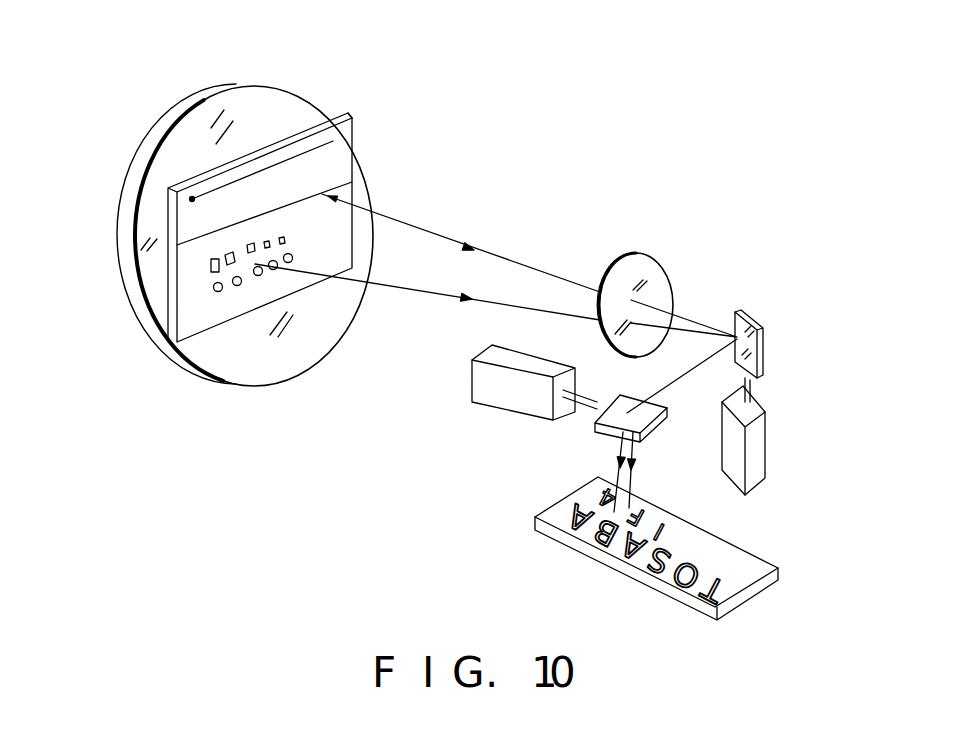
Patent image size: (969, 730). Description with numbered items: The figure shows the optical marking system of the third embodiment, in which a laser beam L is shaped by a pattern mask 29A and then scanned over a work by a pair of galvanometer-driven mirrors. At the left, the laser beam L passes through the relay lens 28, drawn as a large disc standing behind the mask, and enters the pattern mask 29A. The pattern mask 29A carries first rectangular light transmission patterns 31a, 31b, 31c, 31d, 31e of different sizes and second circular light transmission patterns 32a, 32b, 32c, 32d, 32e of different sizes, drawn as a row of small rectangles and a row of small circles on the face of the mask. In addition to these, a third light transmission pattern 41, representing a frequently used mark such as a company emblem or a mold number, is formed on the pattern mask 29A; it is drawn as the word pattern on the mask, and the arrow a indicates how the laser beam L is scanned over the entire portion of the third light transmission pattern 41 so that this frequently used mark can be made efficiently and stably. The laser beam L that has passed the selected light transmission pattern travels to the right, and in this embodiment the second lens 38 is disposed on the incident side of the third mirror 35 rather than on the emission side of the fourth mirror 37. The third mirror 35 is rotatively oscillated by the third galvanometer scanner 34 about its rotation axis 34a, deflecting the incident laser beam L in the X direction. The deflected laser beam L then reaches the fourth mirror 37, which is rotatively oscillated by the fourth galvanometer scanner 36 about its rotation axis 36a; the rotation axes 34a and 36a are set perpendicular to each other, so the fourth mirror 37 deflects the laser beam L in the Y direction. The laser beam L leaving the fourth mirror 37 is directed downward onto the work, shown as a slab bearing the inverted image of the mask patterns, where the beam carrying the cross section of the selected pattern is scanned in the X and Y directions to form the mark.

The relay lens 28 is at (248, 88).
The pattern mask 29A is at (350, 190).
The third light transmission pattern 41 is at (311, 152).
The arrow a is at (350, 110).
The first rectangular light transmission pattern 31a is at (211, 272).
The first rectangular light transmission pattern 31b is at (225, 261).
The first rectangular light transmission pattern 31c is at (247, 249).
The first rectangular light transmission pattern 31d is at (269, 243).
The first rectangular light transmission pattern 31e is at (285, 240).
The second circular light transmission pattern 32a is at (214, 290).
The second circular light transmission pattern 32b is at (237, 286).
The second circular light transmission pattern 32c is at (258, 276).
The second circular light transmission pattern 32d is at (291, 262).
The second circular light transmission pattern 32e is at (278, 267).
The laser beam L is at (454, 245).
The second lens 38 is at (662, 283).
The third mirror 35 is at (765, 340).
The rotation axis 34a is at (752, 393).
The third galvanometer scanner 34 is at (765, 442).
The fourth galvanometer scanner 36 is at (493, 397).
The rotation axis 36a is at (584, 408).
The fourth mirror 37 is at (645, 432).